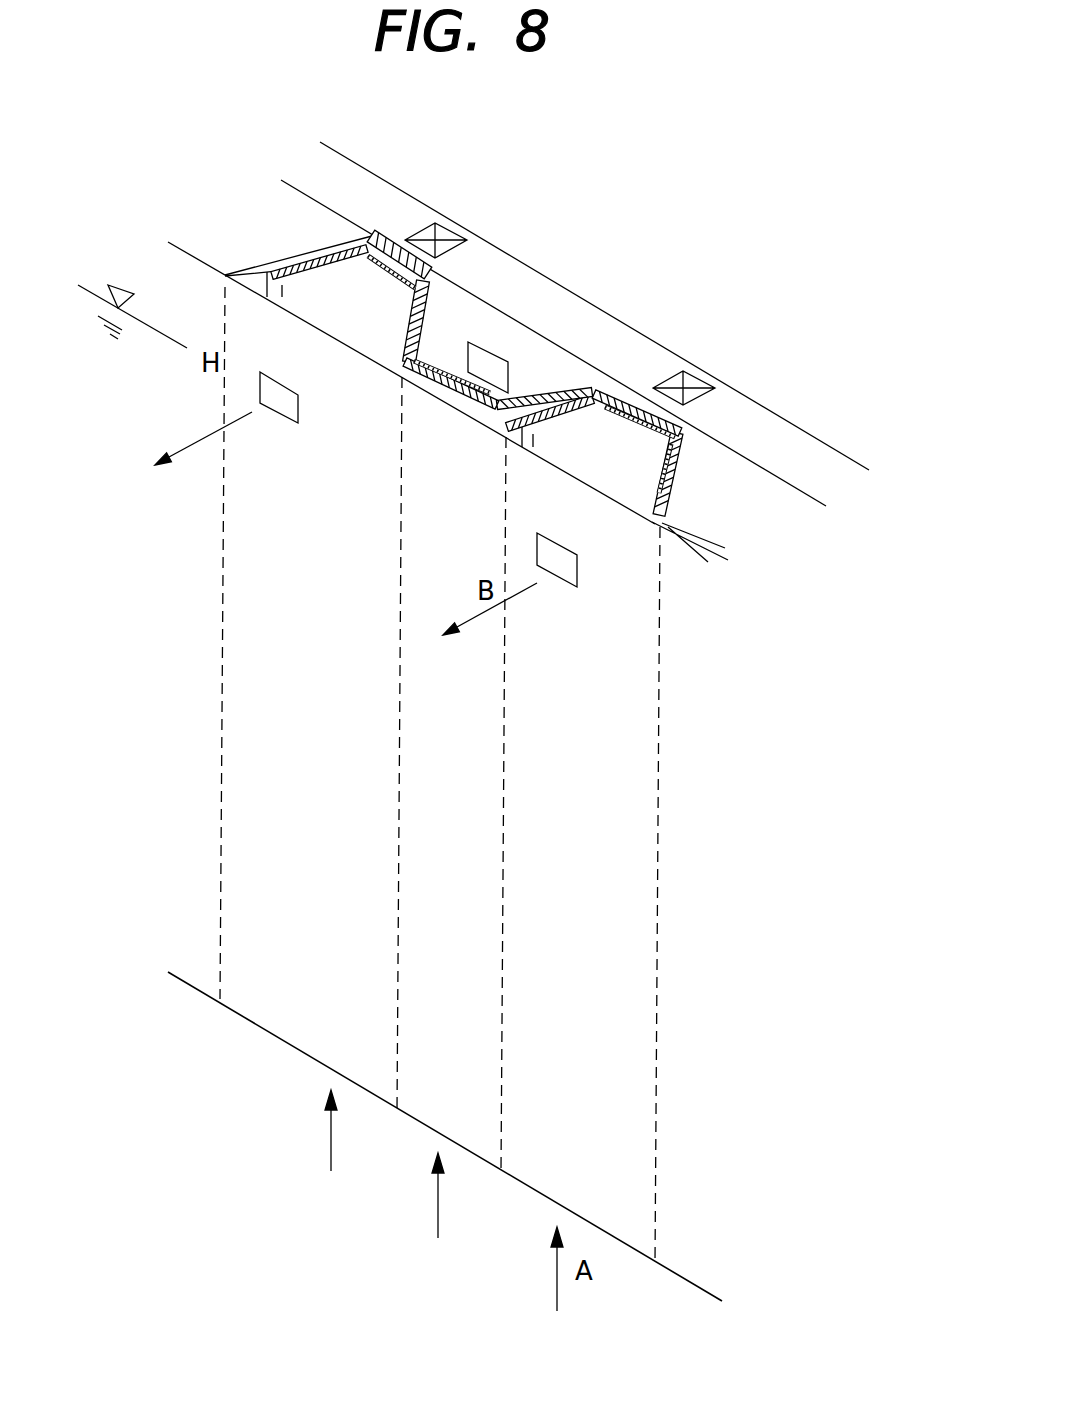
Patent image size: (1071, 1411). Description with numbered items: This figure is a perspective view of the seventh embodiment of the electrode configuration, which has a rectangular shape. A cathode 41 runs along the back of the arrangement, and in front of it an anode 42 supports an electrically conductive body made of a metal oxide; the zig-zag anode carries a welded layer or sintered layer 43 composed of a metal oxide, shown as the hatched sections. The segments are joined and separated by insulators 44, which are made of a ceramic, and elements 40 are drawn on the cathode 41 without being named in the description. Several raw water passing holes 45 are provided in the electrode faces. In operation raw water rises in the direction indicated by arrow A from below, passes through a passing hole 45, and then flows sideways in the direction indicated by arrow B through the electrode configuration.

The anchor block 40 is at (693, 370).
The cathode 41 is at (747, 422).
The anode 42 is at (678, 483).
The welded layer or sintered layer 43 is at (408, 320).
The insulator 44 is at (647, 390).
The raw water passing hole 45 is at (288, 410).